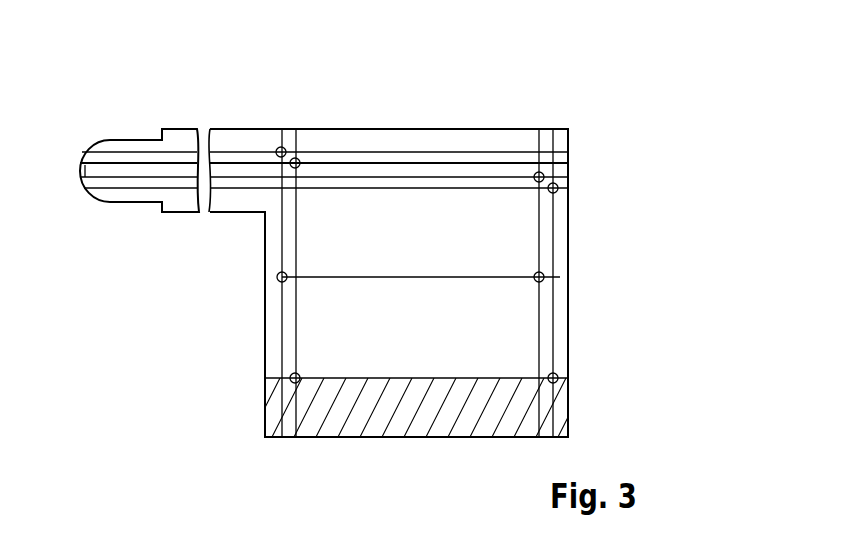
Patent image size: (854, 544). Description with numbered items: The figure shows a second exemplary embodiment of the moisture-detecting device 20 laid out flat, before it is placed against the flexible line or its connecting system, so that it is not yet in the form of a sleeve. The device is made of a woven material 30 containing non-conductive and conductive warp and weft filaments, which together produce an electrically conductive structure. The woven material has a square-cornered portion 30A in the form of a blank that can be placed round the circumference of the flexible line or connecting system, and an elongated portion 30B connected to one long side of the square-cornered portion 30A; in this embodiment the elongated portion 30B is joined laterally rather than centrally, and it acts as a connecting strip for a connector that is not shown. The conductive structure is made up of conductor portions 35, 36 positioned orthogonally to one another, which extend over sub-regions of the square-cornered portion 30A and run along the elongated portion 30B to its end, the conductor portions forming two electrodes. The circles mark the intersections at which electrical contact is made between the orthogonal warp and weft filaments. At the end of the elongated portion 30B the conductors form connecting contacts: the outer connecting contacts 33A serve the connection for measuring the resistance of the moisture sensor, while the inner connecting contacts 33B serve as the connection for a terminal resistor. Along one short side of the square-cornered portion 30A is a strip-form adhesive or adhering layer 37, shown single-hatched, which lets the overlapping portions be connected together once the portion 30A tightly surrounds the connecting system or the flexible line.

The device 20 is at (352, 124).
The woven material 30 is at (262, 343).
The square-cornered portion 30A is at (574, 330).
The elongated portion 30B is at (247, 140).
The outer connecting contacts 33A is at (118, 187).
The inner connecting contacts 33B is at (92, 168).
The conductor portions 35 is at (452, 150).
The conductor portions 36 is at (553, 213).
The adhesive or adhering layer 37 is at (410, 418).